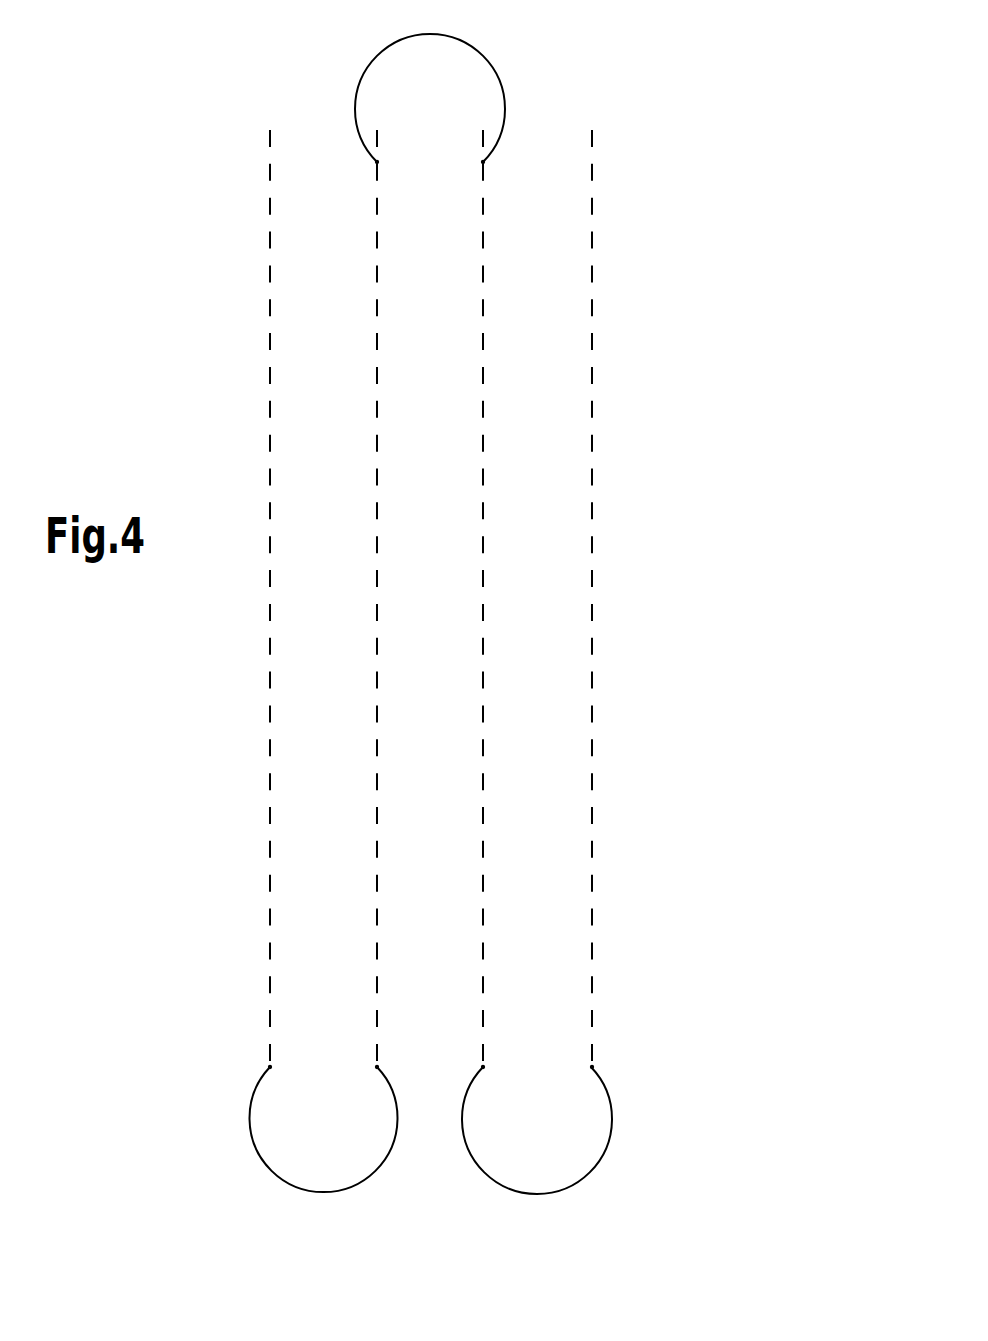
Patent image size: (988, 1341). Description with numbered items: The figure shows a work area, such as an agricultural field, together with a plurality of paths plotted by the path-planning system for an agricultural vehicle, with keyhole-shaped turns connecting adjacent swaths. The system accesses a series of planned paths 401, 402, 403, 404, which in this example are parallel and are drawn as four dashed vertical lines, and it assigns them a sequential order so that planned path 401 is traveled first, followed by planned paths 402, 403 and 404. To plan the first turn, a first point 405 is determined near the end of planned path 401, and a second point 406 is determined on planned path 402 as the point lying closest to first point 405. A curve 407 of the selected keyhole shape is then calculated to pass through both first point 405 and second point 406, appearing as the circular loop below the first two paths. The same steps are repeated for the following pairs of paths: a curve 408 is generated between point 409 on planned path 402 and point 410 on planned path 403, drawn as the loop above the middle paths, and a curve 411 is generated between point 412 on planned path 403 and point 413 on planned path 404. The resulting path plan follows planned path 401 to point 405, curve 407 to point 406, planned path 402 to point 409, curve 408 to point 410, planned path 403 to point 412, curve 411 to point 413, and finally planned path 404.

The first planned path 401 is at (268, 582).
The second planned path 402 is at (375, 587).
The third planned path 403 is at (481, 590).
The fourth planned path 404 is at (590, 610).
The first point 405 is at (268, 1066).
The second point 406 is at (379, 1068).
The curve 407 is at (381, 1166).
The curve 408 is at (356, 89).
The point 409 is at (375, 163).
The point 410 is at (485, 163).
The curve 411 is at (598, 1168).
The point 412 is at (481, 1066).
The point 413 is at (594, 1066).